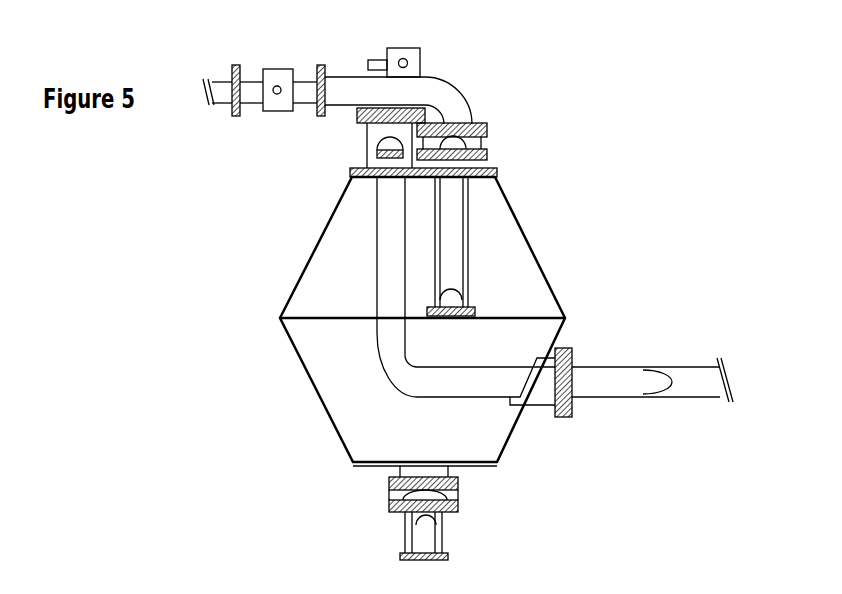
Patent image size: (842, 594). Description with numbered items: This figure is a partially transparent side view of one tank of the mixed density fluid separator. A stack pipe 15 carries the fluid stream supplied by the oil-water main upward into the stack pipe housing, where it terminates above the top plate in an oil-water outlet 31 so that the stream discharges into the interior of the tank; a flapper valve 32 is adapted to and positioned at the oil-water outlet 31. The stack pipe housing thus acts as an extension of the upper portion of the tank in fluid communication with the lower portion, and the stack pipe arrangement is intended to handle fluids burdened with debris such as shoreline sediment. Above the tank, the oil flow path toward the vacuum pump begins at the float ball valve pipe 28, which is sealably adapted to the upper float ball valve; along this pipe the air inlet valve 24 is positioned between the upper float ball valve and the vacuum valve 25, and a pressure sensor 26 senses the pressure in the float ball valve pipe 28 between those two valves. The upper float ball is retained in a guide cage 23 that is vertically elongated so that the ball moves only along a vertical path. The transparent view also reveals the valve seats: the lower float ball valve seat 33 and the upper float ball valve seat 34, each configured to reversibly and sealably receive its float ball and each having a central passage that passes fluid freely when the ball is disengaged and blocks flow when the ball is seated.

The stack pipe 15 is at (377, 334).
The guide cage 23 is at (473, 233).
The air inlet valve 24 is at (426, 47).
The vacuum valve 25 is at (270, 57).
The pressure sensor 26 is at (362, 60).
The float ball valve pipe 28 is at (460, 88).
The oil-water outlet 31 is at (378, 159).
The flapper valve 32 is at (378, 142).
The lower float ball valve seat 33 is at (389, 499).
The upper float ball valve seat 34 is at (476, 148).